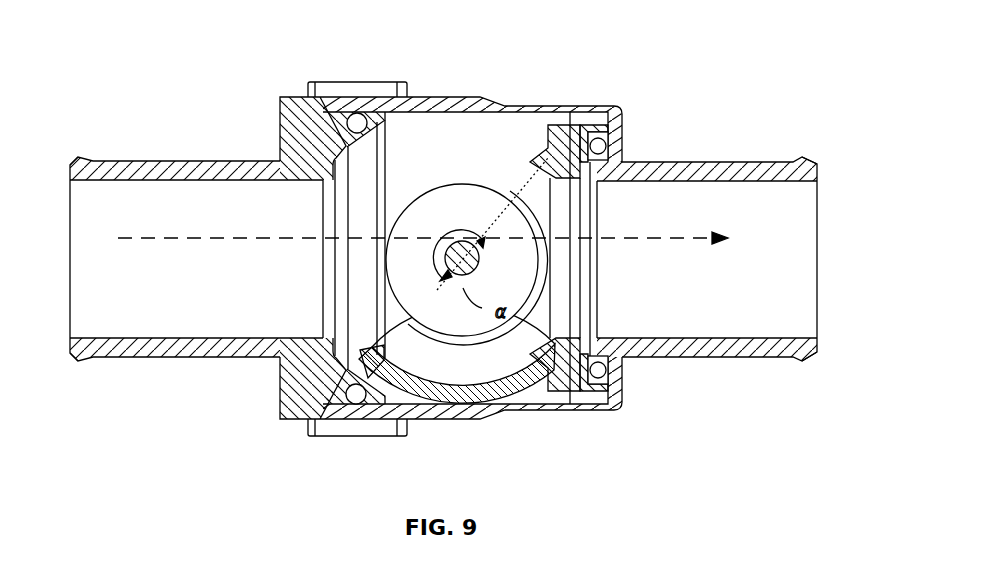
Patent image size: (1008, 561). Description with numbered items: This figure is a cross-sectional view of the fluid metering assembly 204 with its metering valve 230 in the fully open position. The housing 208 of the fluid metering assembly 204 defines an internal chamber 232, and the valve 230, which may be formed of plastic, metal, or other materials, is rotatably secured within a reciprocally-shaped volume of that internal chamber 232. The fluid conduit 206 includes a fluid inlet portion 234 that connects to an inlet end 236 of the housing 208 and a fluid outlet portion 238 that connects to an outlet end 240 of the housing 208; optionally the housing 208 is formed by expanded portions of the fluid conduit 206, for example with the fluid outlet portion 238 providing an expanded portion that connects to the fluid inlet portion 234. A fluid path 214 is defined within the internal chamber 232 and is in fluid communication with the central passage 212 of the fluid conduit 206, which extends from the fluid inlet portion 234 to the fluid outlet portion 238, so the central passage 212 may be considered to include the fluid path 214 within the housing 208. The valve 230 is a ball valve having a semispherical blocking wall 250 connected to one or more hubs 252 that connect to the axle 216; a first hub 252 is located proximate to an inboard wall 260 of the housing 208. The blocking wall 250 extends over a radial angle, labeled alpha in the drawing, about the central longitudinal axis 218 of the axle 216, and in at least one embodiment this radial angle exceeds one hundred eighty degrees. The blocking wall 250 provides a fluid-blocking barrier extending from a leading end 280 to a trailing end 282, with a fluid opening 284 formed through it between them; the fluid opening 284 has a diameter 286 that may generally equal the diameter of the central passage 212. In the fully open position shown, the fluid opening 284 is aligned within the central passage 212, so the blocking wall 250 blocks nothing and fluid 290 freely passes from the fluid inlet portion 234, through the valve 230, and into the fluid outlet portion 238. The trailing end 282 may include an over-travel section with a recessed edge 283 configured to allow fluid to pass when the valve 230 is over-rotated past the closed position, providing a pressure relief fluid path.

The fluid metering assembly 204 is at (478, 241).
The fluid conduit 206 is at (128, 160).
The housing 208 is at (474, 99).
The central passage 212 is at (156, 308).
The fluid path 214 is at (398, 188).
The axle 216 is at (461, 241).
The central longitudinal axis 218 is at (460, 262).
The metering valve 230 is at (515, 378).
The internal chamber 232 is at (352, 320).
The fluid inlet portion 234 is at (190, 161).
The inlet end 236 is at (300, 97).
The fluid outlet portion 238 is at (660, 162).
The outlet end 240 is at (586, 130).
The semispherical blocking wall 250 is at (444, 397).
The hub 252 is at (467, 197).
The inboard wall 260 is at (438, 133).
The leading end 280 is at (550, 127).
The trailing end 282 is at (352, 404).
The recessed edge 283 is at (364, 352).
The fluid opening 284 is at (562, 192).
The diameter 286 is at (558, 360).
The fluid 290 is at (666, 243).